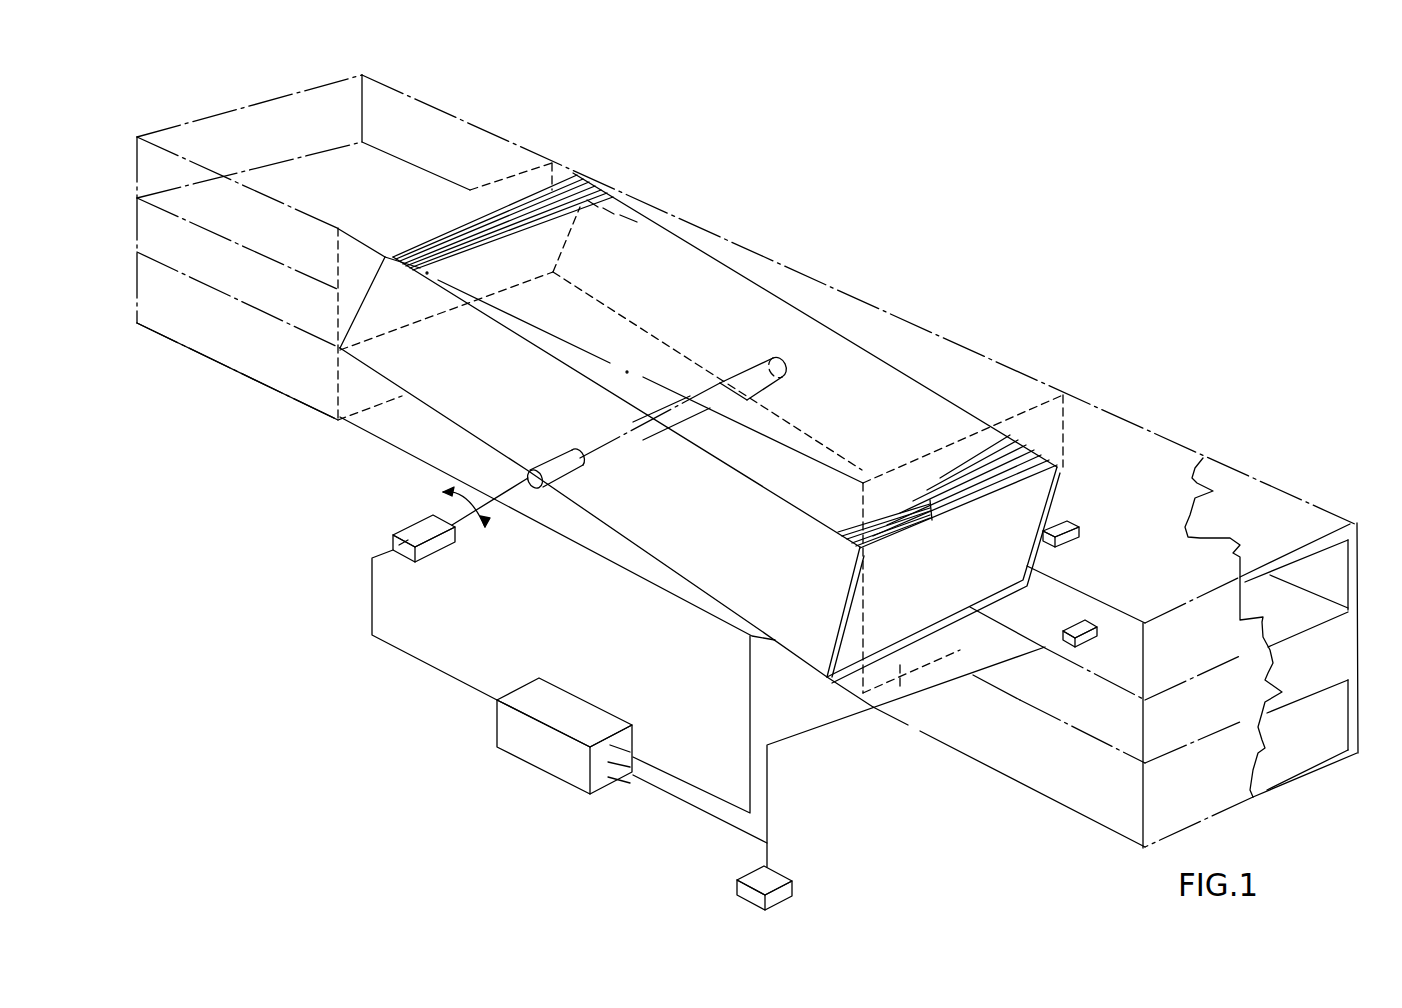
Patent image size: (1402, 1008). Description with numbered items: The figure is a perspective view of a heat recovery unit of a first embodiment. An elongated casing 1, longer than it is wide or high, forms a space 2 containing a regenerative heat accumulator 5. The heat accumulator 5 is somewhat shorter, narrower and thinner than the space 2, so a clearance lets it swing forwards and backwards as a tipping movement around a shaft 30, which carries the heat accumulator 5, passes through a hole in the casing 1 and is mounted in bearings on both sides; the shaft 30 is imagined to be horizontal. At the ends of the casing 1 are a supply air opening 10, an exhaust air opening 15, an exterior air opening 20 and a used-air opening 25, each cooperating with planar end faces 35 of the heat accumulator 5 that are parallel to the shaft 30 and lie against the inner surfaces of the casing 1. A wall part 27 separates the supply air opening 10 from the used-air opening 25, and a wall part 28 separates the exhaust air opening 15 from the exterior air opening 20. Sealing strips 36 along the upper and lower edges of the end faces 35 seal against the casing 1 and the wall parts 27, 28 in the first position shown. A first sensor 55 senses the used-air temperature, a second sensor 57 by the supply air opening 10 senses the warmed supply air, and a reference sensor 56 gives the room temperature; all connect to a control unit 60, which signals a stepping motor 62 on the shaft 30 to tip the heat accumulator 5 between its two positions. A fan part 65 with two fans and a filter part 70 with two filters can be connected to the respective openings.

The casing 1 is at (808, 292).
The space 2 is at (673, 260).
The regenerative heat accumulator 5 is at (423, 398).
The supply air opening 10 is at (916, 704).
The exhaust air opening 15 is at (337, 378).
The exterior air opening 20 is at (338, 253).
The used-air opening 25 is at (1068, 420).
The wall part 27 is at (888, 538).
The wall part 28 is at (347, 308).
The shaft 30 is at (570, 472).
The end faces 35 is at (576, 182).
The sealing strips 36 is at (837, 628).
The first sensor 55 is at (1081, 533).
The reference sensor 56 is at (778, 890).
The second sensor 57 is at (1083, 630).
The control unit 60 is at (573, 713).
The stepping motor 62 is at (438, 548).
The fan part 65 is at (1247, 486).
The filter part 70 is at (468, 152).